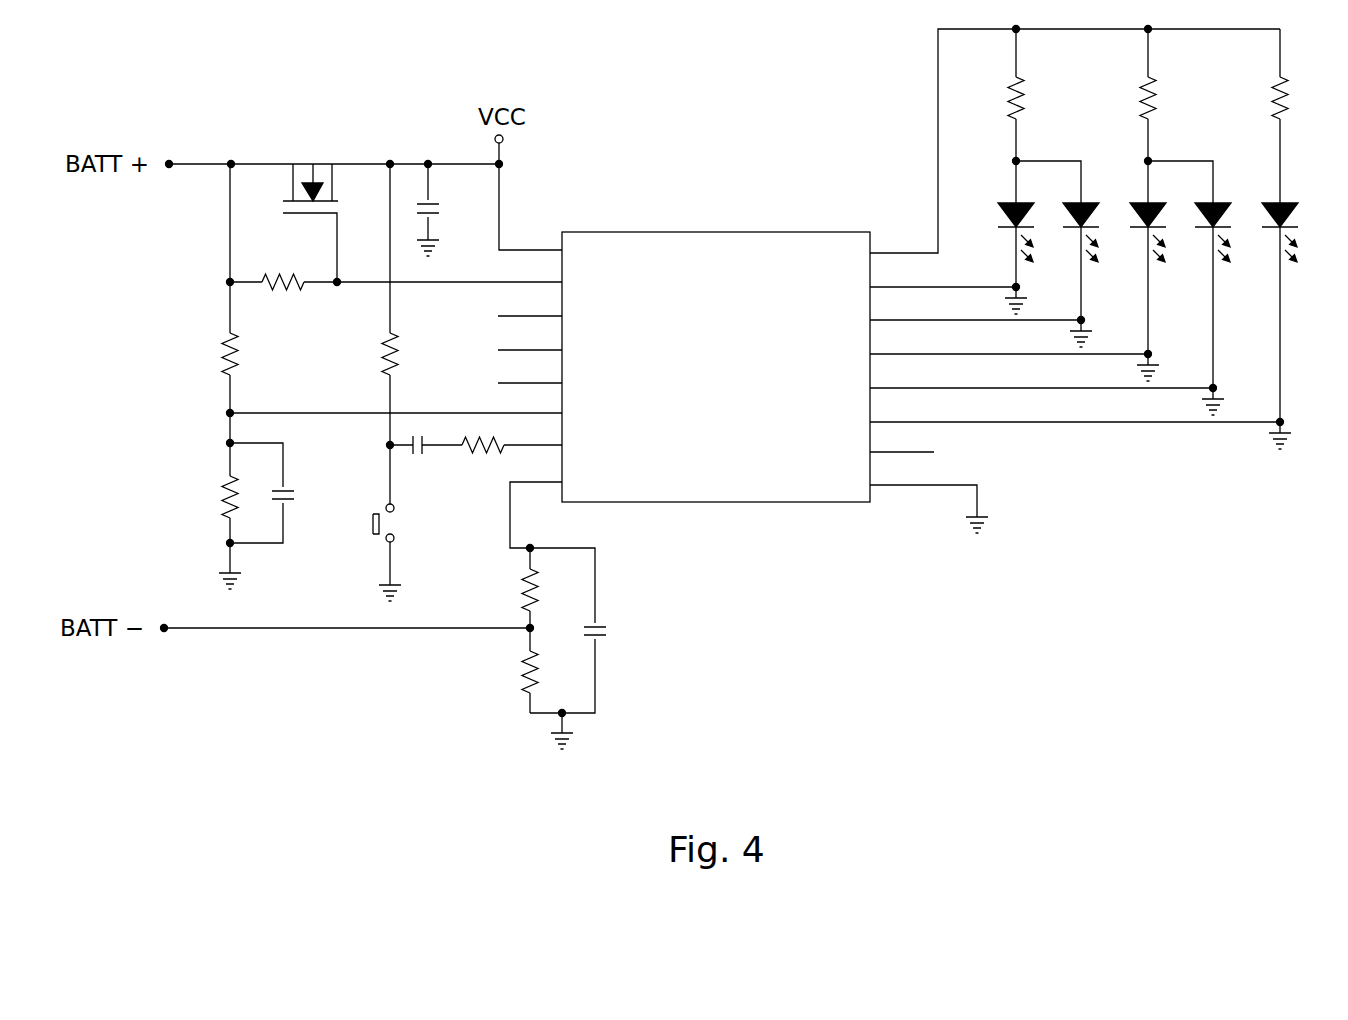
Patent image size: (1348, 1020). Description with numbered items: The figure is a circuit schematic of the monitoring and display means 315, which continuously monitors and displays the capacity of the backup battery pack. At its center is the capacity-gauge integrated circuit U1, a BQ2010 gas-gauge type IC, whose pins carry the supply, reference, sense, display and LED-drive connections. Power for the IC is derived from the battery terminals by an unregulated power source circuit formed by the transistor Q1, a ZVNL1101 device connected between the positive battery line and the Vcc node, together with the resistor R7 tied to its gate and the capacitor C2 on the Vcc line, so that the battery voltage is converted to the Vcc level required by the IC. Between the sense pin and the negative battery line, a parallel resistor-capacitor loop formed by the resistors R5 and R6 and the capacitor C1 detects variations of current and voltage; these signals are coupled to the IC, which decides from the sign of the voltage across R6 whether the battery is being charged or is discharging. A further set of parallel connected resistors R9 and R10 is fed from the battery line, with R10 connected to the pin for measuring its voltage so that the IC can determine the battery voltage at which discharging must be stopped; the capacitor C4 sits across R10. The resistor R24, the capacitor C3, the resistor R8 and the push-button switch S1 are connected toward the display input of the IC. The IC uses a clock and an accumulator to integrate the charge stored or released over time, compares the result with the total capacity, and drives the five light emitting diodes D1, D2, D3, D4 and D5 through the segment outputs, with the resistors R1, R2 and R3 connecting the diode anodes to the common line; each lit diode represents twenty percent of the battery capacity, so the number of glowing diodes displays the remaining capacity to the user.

The monitoring and display means 315 is at (1049, 538).
The transistor Q1 is at (302, 192).
The capacity-gauge integrated circuit U1 is at (712, 366).
The resistor R1 is at (1038, 98).
The resistor R2 is at (1169, 98).
The resistor R3 is at (1301, 98).
The resistor R5 is at (510, 590).
The resistor R6 is at (510, 672).
The resistor R7 is at (283, 297).
The resistor R8 is at (483, 462).
The resistor R9 is at (252, 354).
The resistor R10 is at (201, 497).
The resistor R24 is at (418, 354).
The capacitor C1 is at (617, 632).
The capacitor C2 is at (448, 210).
The capacitor C3 is at (418, 461).
The capacitor C4 is at (305, 495).
The light emitting diode D1 is at (1026, 219).
The light emitting diode D2 is at (1091, 219).
The light emitting diode D3 is at (1157, 219).
The light emitting diode D4 is at (1223, 219).
The light emitting diode D5 is at (1289, 219).
The switch S1 is at (401, 523).